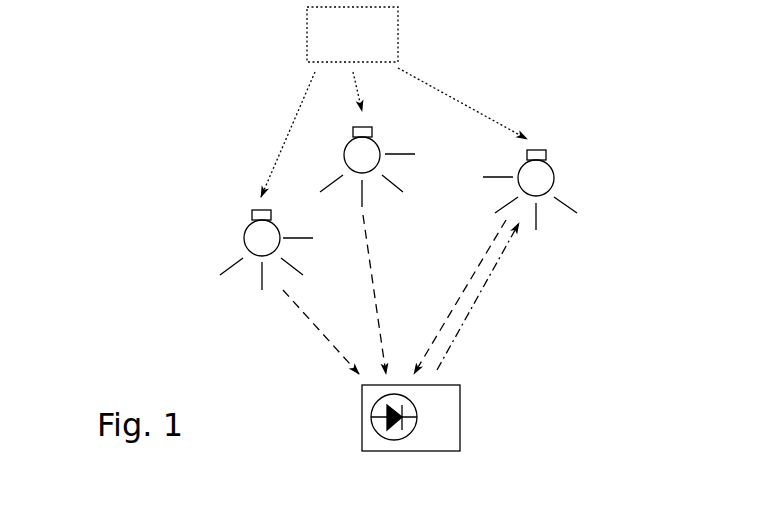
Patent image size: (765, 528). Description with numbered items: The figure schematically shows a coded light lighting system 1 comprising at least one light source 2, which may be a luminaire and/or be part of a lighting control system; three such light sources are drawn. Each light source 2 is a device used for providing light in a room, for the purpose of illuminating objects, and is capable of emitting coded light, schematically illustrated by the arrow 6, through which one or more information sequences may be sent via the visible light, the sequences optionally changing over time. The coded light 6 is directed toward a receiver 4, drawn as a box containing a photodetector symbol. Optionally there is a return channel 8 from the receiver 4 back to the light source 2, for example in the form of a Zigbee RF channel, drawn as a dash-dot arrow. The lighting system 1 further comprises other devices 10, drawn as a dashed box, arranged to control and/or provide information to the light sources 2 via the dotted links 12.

The lighting system 1 is at (232, 91).
The light source 2 is at (552, 170).
The receiver 4 is at (362, 417).
The coded light 6 is at (482, 258).
The return channel 8 is at (482, 287).
The other devices 10 is at (398, 35).
The control signal 12 is at (432, 92).